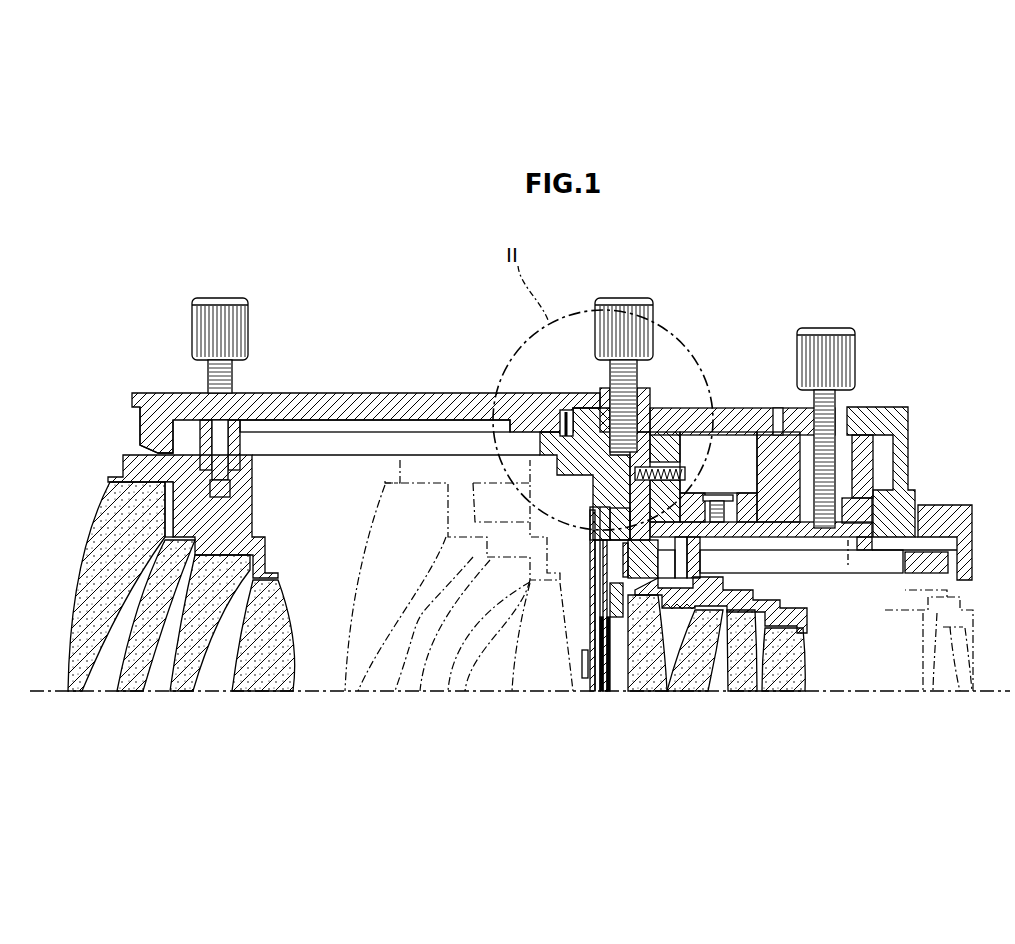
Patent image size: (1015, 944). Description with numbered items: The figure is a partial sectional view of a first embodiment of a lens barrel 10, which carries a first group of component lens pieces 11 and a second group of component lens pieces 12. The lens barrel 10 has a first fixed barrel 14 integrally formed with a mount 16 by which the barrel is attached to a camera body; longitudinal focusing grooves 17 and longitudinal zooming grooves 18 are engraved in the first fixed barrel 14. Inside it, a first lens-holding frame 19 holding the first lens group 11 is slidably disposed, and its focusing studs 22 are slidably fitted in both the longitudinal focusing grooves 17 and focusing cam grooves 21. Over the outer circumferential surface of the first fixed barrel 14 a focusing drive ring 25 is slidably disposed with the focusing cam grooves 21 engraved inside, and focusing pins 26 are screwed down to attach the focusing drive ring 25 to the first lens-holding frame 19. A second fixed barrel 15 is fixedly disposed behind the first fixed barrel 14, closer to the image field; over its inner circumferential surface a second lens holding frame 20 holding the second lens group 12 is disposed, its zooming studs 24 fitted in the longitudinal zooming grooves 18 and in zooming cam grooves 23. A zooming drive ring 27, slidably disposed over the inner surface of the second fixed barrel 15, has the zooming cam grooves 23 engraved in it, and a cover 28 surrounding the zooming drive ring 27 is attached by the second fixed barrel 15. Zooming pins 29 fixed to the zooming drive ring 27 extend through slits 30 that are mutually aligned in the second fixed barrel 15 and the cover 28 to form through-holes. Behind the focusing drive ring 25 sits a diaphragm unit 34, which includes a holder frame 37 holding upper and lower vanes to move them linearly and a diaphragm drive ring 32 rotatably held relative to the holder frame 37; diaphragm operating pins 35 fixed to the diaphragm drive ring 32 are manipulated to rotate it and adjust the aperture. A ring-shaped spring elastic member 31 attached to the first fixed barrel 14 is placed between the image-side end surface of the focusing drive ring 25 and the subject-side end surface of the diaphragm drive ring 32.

The lens barrel 10 is at (924, 758).
The first group of component lens pieces 11 is at (295, 695).
The second group of component lens pieces 12 is at (807, 695).
The first fixed barrel 14 is at (560, 440).
The second fixed barrel 15 is at (765, 445).
The mount 16 is at (955, 507).
The longitudinal focusing grooves 17 is at (340, 430).
The longitudinal zooming grooves 18 is at (884, 605).
The first lens-holding frame 19 is at (123, 465).
The second lens holding frame 20 is at (833, 543).
The focusing cam grooves 21 is at (435, 430).
The focusing studs 22 is at (240, 420).
The zooming cam grooves 23 is at (955, 563).
The zooming studs 24 is at (622, 600).
The focusing drive ring 25 is at (150, 394).
The focusing pins 26 is at (226, 298).
The zooming drive ring 27 is at (957, 546).
The cover 28 is at (893, 408).
The zooming pins 29 is at (830, 328).
The slits 30 is at (850, 425).
The spring elastic member 31 is at (565, 410).
The diaphragm drive ring 32 is at (650, 392).
The diaphragm unit 34 is at (586, 622).
The diaphragm operating pins 35 is at (626, 298).
The holder frame 37 is at (610, 512).